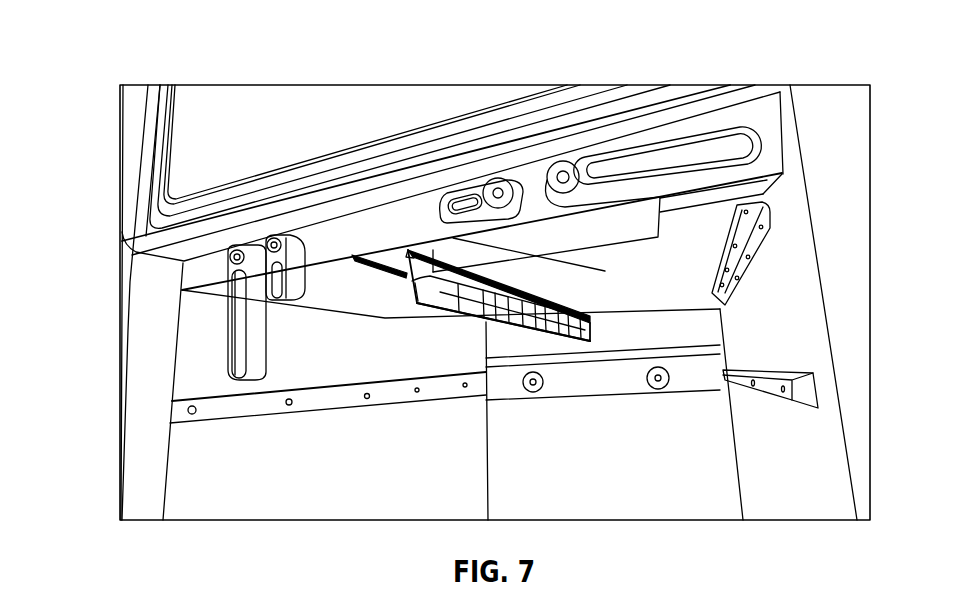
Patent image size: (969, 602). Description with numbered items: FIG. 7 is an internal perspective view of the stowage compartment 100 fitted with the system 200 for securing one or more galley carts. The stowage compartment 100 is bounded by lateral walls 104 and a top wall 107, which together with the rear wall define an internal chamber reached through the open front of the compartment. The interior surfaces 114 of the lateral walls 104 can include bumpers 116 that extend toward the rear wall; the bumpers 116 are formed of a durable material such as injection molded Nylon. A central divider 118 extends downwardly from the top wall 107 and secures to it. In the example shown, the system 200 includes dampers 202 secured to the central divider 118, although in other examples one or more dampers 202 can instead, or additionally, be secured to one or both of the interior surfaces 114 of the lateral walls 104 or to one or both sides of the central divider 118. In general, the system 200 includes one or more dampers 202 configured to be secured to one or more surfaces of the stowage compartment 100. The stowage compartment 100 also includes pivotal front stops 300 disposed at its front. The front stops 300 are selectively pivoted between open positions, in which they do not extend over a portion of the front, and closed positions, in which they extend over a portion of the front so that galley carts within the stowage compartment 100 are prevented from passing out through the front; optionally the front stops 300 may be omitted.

The stowage compartment 100 is at (118, 255).
The lateral walls 104 is at (192, 446).
The top wall 107 is at (704, 195).
The interior surfaces 114 is at (195, 346).
The bumpers 116 is at (262, 410).
The central divider 118 is at (522, 356).
The system for securing one or more galley carts 200 is at (401, 276).
The dampers 202 is at (586, 314).
The front stops 300 is at (292, 258).